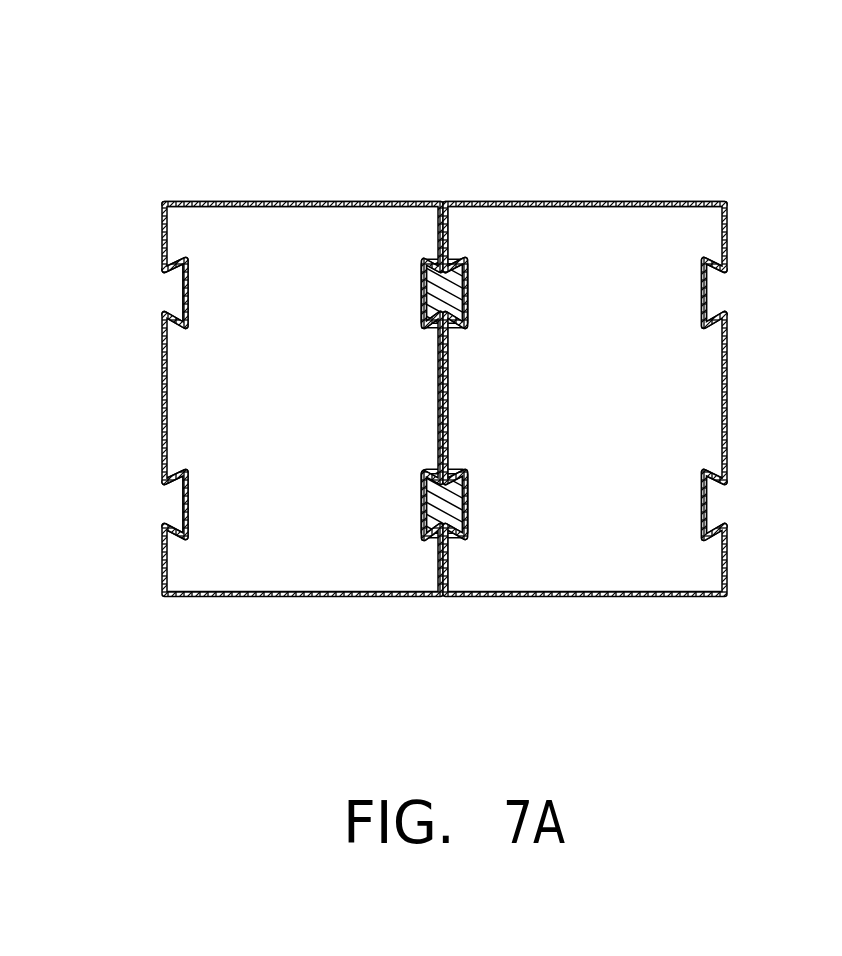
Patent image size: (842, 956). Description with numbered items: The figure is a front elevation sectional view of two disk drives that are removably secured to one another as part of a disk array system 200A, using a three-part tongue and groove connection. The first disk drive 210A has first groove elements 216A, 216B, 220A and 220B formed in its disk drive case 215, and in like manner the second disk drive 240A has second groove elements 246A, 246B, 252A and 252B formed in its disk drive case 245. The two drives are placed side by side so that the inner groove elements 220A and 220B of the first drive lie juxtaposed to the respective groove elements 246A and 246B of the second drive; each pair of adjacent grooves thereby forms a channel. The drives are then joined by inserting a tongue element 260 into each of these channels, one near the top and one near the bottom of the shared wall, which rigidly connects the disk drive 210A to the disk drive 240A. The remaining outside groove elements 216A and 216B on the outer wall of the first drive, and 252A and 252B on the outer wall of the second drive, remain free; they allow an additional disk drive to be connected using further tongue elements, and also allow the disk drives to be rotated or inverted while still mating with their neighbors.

The disk array system 200A is at (477, 64).
The disk drive 210A is at (269, 183).
The disk drive case 215 is at (209, 200).
The first groove element 216A is at (172, 297).
The first groove element 216B is at (172, 507).
The first groove element 220A is at (420, 272).
The first groove element 220B is at (420, 472).
The disk drive 240A is at (590, 183).
The disk drive case 245 is at (529, 200).
The second groove element 246A is at (468, 295).
The second groove element 246B is at (468, 505).
The second groove element 252A is at (718, 296).
The second groove element 252B is at (718, 506).
The tongue element 260 is at (422, 313).